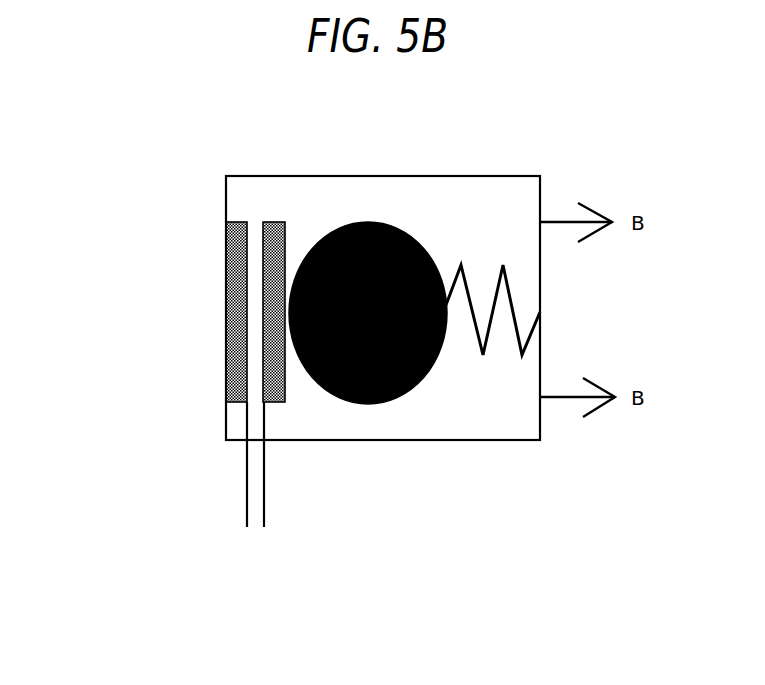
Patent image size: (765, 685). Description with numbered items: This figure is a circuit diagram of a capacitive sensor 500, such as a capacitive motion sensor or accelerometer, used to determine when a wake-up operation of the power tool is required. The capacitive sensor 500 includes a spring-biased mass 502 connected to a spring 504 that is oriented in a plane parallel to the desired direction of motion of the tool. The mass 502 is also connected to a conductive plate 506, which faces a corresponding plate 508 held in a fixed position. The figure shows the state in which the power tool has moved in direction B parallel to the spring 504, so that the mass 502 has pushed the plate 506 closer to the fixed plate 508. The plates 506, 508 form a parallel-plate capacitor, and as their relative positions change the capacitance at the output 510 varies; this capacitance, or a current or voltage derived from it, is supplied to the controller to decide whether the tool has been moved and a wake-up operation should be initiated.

The capacitive sensor 500 is at (512, 188).
The spring-biased mass 502 is at (424, 380).
The spring 504 is at (514, 300).
The conductive plate 506 is at (226, 378).
The corresponding plate 508 is at (226, 225).
The output 510 is at (262, 528).